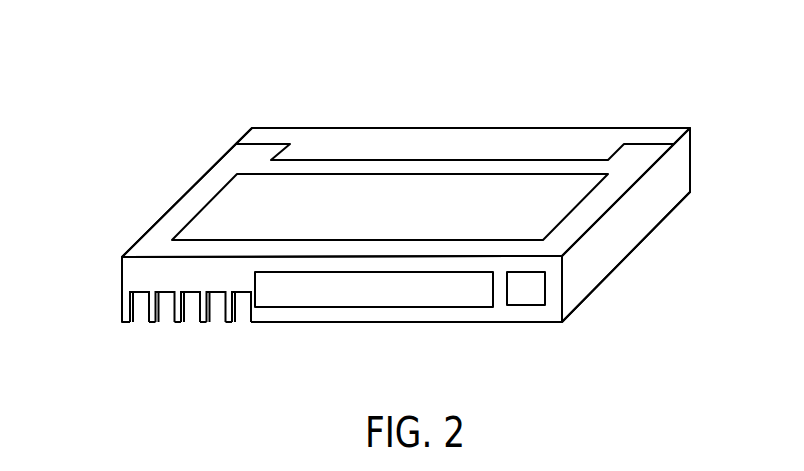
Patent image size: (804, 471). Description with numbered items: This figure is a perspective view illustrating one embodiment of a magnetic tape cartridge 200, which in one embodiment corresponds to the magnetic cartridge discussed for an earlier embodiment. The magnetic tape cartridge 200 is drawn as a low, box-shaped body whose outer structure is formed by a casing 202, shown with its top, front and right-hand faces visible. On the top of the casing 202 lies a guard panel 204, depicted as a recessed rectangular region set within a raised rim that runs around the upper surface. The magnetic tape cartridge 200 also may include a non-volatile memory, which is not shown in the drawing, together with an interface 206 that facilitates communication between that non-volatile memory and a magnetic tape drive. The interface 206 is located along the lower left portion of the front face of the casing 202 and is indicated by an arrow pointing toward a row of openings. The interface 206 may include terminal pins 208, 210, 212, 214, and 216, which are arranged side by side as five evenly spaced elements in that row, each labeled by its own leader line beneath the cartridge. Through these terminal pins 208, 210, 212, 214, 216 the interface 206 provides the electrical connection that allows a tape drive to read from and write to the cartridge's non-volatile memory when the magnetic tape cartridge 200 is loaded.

The magnetic tape cartridge 200 is at (171, 70).
The casing 202 is at (630, 236).
The guard panel 204 is at (577, 140).
The interface 206 is at (139, 353).
The terminal pin 208 is at (143, 327).
The terminal pin 210 is at (170, 327).
The terminal pin 212 is at (192, 327).
The terminal pin 214 is at (218, 327).
The terminal pin 216 is at (242, 327).